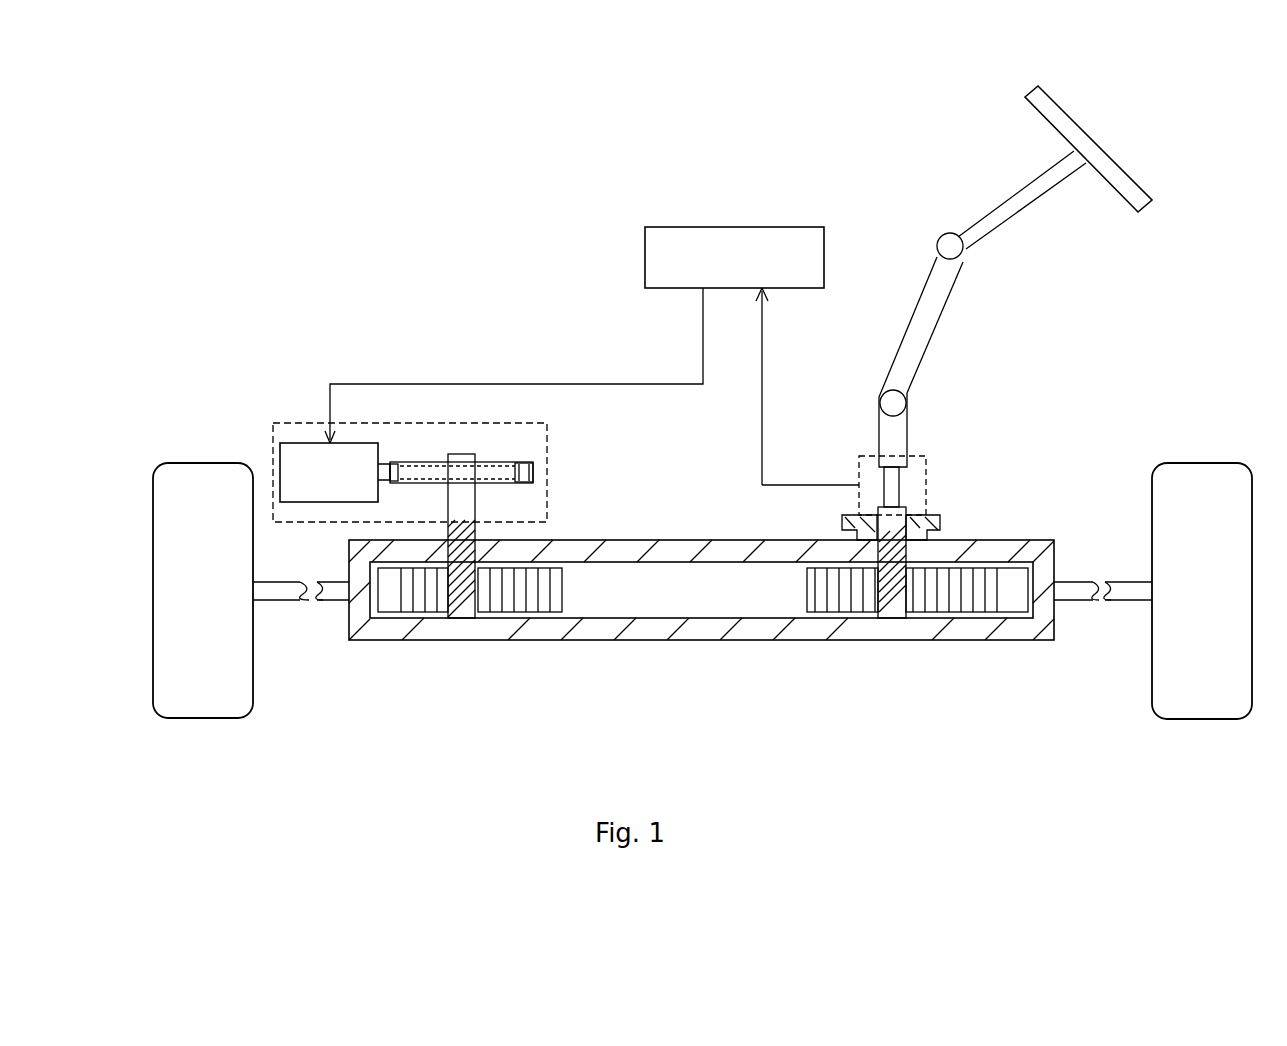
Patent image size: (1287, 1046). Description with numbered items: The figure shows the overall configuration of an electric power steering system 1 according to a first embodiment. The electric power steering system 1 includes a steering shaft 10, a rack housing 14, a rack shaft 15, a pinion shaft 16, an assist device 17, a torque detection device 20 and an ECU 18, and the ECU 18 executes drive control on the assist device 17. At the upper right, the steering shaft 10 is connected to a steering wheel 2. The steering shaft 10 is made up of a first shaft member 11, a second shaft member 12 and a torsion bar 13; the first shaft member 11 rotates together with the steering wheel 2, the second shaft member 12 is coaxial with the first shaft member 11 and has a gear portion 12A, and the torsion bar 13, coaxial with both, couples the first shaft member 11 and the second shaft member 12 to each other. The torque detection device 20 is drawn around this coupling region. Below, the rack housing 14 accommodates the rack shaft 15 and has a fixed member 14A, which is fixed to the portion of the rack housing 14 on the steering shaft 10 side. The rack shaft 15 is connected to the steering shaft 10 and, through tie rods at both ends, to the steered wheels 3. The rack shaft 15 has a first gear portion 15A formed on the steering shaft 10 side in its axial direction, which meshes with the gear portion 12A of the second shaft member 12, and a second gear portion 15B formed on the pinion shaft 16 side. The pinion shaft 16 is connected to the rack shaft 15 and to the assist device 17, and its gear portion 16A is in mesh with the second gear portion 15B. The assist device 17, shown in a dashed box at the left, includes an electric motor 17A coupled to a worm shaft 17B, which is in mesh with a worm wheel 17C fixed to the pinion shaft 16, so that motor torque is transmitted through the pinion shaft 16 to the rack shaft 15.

The electric power steering system 1 is at (390, 150).
The steering wheel 2 is at (1068, 108).
The steered wheels 3 is at (202, 720).
The steering shaft 10 is at (957, 216).
The first shaft member 11 is at (909, 427).
The second shaft member 12 is at (924, 583).
The gear portion 12A is at (895, 608).
The torsion bar 13 is at (902, 483).
The rack housing 14 is at (701, 562).
The fixed member 14A is at (857, 514).
The rack shaft 15 is at (701, 622).
The first gear portion 15A is at (955, 603).
The second gear portion 15B is at (525, 605).
The pinion shaft 16 is at (485, 568).
The gear portion 16A is at (466, 610).
The assist device 17 is at (411, 443).
The electric motor 17A is at (290, 458).
The worm shaft 17B is at (535, 478).
The worm wheel 17C is at (521, 462).
The ECU 18 is at (733, 226).
The torque detection device 20 is at (866, 455).